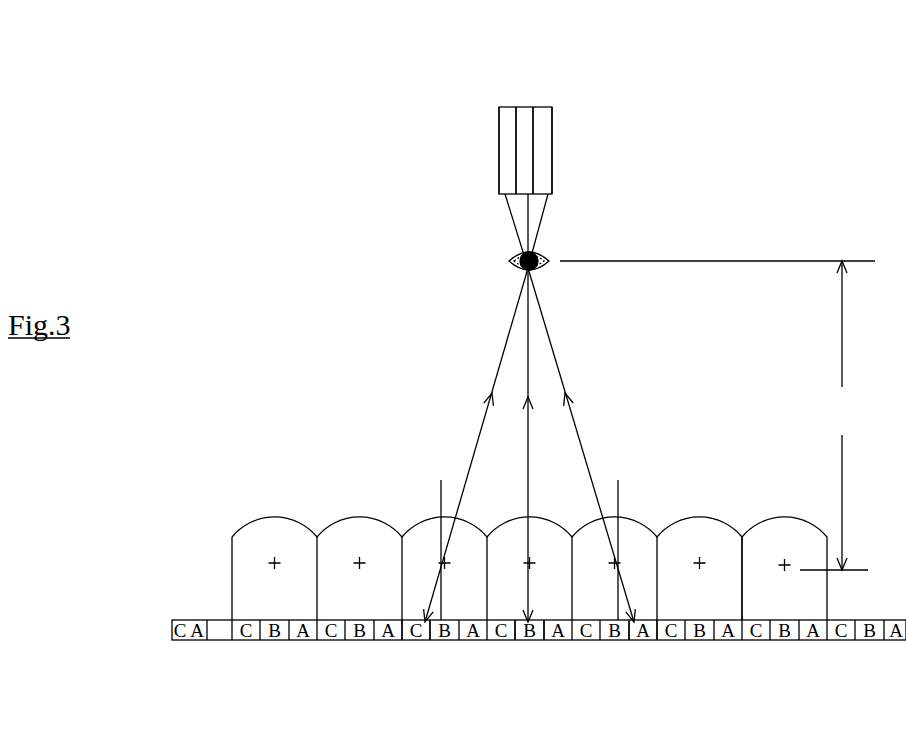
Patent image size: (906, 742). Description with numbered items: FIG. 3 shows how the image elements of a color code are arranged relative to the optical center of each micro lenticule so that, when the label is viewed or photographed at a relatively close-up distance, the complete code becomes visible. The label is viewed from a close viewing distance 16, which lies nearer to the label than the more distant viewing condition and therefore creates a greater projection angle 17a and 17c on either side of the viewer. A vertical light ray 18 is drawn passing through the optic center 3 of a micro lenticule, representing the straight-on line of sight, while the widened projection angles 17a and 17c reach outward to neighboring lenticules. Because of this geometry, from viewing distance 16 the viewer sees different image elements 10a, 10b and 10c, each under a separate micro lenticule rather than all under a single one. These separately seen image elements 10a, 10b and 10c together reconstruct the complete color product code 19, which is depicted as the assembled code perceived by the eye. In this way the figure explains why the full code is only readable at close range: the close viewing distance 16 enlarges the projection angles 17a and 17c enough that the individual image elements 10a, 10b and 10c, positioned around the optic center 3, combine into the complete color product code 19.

The optic center 3 is at (780, 570).
The image element 10a is at (508, 113).
The image element 10b is at (525, 113).
The image element 10c is at (540, 113).
The viewing distance 16 is at (834, 415).
The projection angle 17a is at (620, 616).
The projection angle 17c is at (437, 608).
The vertical light ray 18 is at (530, 538).
The complete color product code 19 is at (558, 153).